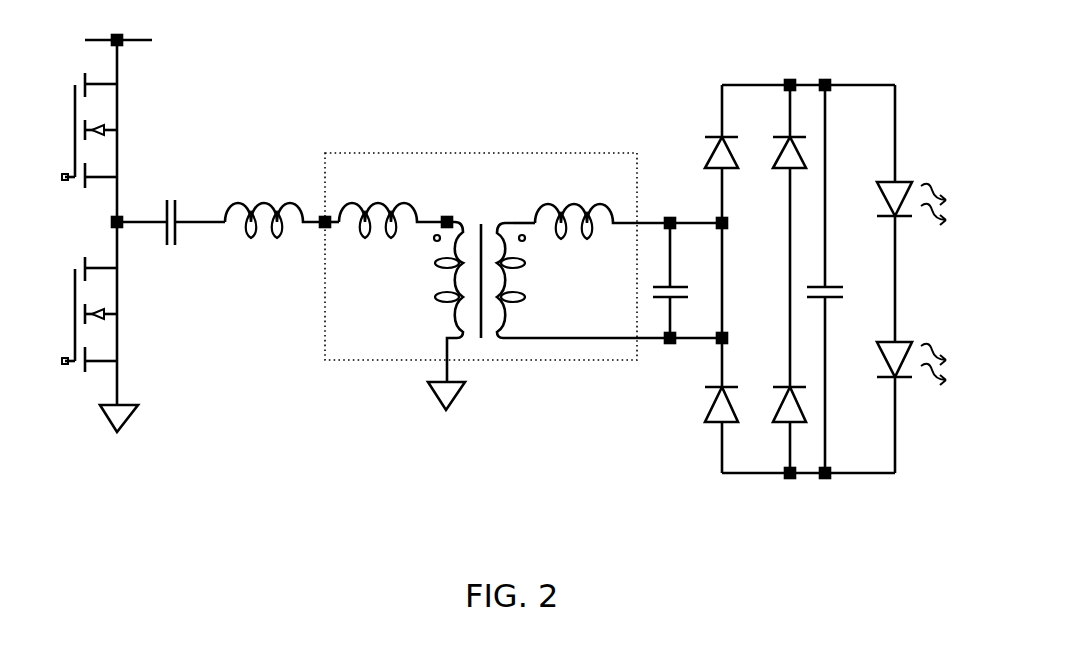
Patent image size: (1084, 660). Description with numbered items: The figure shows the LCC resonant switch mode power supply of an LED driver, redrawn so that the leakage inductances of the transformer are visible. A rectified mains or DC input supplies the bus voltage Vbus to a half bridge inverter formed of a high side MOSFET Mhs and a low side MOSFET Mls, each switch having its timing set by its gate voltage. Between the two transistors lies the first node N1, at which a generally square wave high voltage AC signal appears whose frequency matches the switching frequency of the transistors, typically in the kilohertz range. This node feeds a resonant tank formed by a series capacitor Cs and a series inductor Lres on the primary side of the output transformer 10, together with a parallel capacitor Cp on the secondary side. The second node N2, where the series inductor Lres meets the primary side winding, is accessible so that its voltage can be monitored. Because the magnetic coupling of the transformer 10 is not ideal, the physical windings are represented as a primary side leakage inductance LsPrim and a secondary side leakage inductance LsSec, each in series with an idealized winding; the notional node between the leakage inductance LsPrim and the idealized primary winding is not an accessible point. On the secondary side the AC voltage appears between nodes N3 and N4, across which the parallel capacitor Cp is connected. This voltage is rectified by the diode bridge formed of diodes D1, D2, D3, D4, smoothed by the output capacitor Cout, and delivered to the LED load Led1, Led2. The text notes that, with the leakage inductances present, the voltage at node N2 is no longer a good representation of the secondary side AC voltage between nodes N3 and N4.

The output transformer 10 is at (453, 153).
The bus voltage Vbus is at (142, 42).
The high side MOSFET Mhs is at (100, 131).
The low side MOSFET Mls is at (100, 327).
The first node N1 is at (96, 222).
The series capacitor Cs is at (171, 210).
The series inductor Lres is at (275, 206).
The second node N2 is at (314, 233).
The primary side leakage inductance LsPrim is at (386, 204).
The secondary side leakage inductance LsSec is at (591, 204).
The secondary side node N3 is at (712, 224).
The parallel capacitor Cp is at (680, 280).
The secondary side node N4 is at (712, 339).
The rectifier diode D1 is at (705, 152).
The rectifier diode D2 is at (774, 152).
The rectifier diode D3 is at (705, 404).
The rectifier diode D4 is at (774, 404).
The smoothing output capacitor Cout is at (846, 279).
The LED load Led1 is at (920, 186).
The LED load Led2 is at (920, 347).